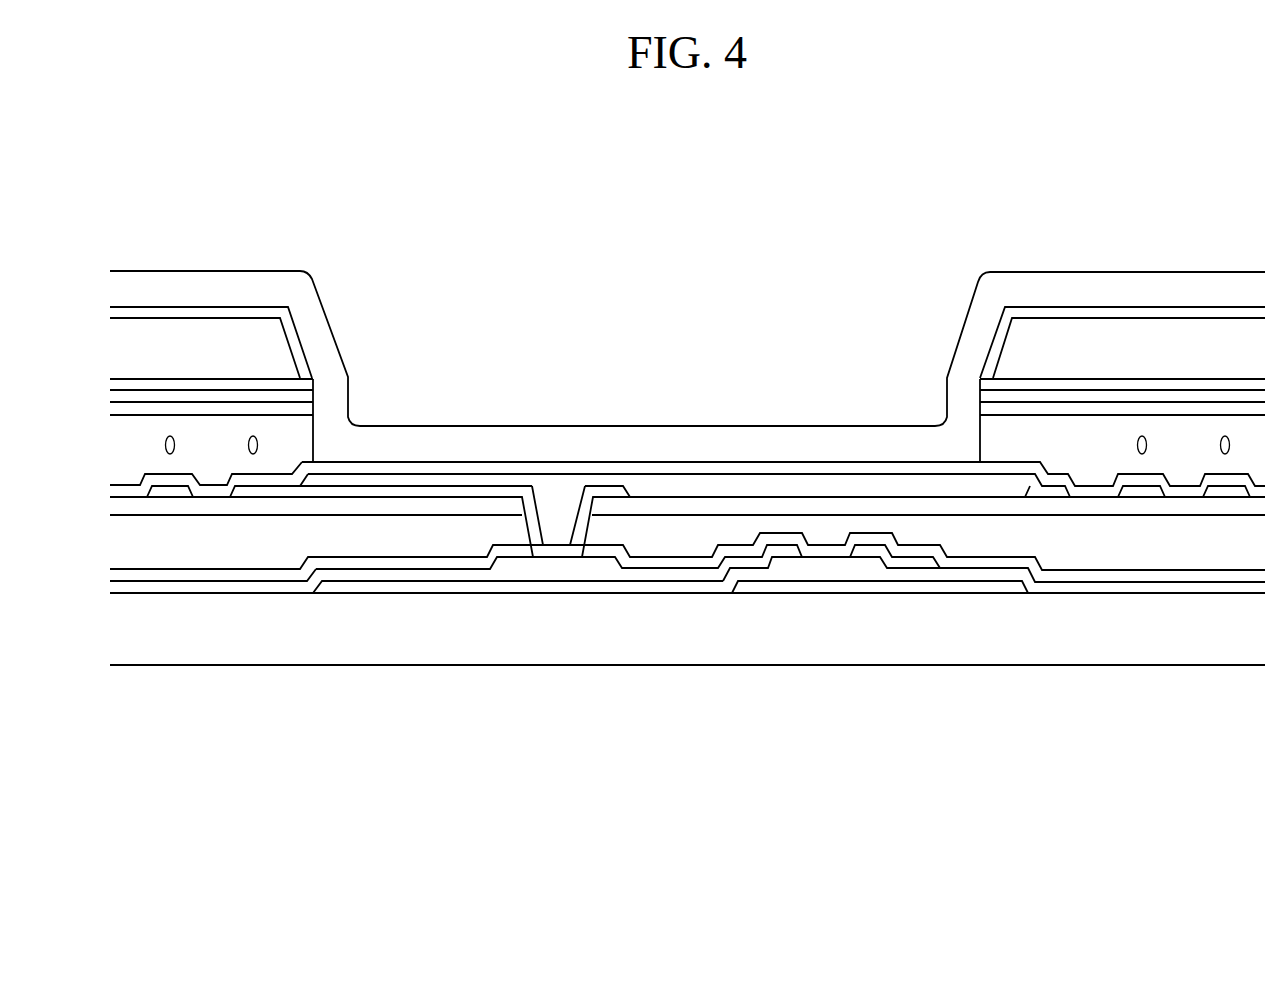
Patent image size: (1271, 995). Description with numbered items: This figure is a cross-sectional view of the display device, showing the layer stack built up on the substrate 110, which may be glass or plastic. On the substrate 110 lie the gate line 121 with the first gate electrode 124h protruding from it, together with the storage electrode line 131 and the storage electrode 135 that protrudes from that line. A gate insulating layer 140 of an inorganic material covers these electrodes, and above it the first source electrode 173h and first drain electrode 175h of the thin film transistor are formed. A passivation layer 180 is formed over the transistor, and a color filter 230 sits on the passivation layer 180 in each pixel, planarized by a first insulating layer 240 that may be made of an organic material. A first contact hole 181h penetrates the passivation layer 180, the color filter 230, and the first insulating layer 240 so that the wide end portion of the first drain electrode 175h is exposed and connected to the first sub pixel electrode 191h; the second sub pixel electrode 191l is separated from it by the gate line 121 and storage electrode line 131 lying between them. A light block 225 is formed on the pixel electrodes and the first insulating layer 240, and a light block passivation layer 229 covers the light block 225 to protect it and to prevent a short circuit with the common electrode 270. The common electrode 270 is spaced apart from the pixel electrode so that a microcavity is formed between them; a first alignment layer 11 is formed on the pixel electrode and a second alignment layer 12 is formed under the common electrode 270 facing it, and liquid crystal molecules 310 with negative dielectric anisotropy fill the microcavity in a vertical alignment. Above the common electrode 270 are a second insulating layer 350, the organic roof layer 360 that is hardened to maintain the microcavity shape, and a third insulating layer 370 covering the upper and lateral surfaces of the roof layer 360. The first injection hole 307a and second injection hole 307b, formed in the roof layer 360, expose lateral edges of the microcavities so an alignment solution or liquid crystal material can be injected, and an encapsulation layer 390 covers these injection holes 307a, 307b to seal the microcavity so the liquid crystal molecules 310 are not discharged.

The first alignment layer 11 is at (132, 490).
The second alignment layer 12 is at (243, 408).
The substrate 110 is at (835, 643).
The gate line 121 is at (985, 587).
The first gate electrode 124h is at (770, 587).
The storage electrode line 131 is at (391, 587).
The storage electrode 135 is at (556, 588).
The gate insulating layer 140 is at (684, 587).
The first source electrode 173h is at (912, 563).
The first drain electrode 175h is at (580, 563).
The passivation layer 180 is at (271, 575).
The first contact hole 181h is at (532, 525).
The first sub pixel electrode 191h is at (457, 492).
The second sub pixel electrode 191l is at (1232, 490).
The light block 225 is at (705, 490).
The light block passivation layer 229 is at (783, 470).
The color filter 230 is at (203, 545).
The first insulating layer 240 is at (1090, 510).
The common electrode 270 is at (127, 397).
The first injection hole 307a is at (977, 440).
The second injection hole 307b is at (317, 438).
The liquid crystal molecules 310 is at (1137, 444).
The second insulating layer 350 is at (221, 383).
The roof layer 360 is at (270, 342).
The third insulating layer 370 is at (177, 313).
The encapsulation layer 390 is at (1003, 288).